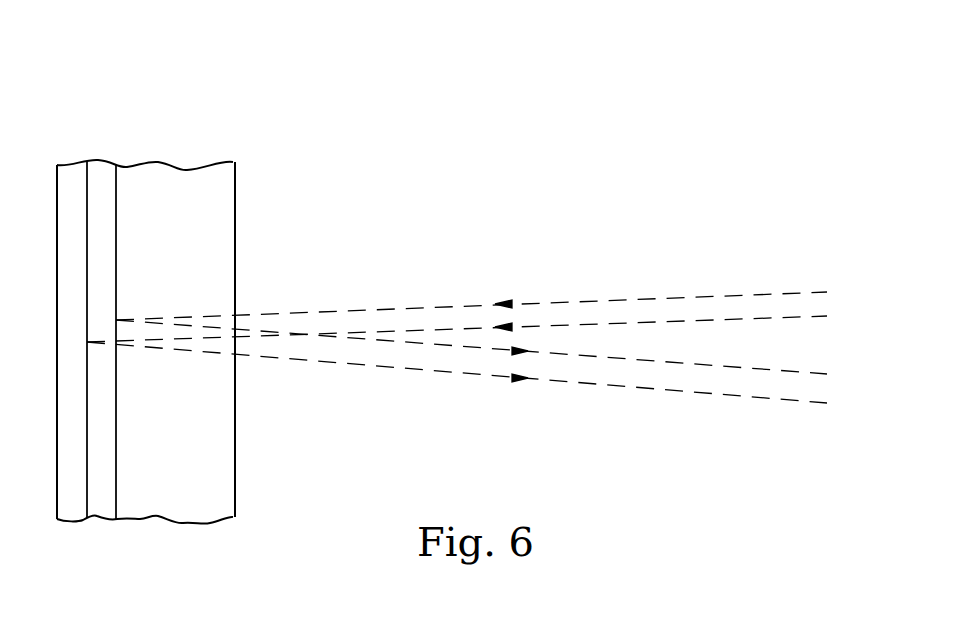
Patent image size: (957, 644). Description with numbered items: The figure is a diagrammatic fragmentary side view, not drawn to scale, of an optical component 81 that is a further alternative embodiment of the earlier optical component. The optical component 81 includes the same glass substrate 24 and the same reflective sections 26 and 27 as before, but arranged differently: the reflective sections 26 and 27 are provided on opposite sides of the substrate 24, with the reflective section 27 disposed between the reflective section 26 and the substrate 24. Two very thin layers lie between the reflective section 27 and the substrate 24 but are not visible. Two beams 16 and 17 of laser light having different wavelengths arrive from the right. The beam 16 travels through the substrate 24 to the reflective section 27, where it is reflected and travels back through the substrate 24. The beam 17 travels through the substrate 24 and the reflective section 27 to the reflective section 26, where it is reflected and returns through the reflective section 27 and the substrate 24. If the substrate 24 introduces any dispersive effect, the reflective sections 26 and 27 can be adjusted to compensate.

The optical component 81 is at (115, 62).
The reflective section 26 is at (72, 178).
The reflective section 27 is at (100, 172).
The glass substrate 24 is at (185, 178).
The beam 16 is at (763, 294).
The beam 17 is at (818, 316).